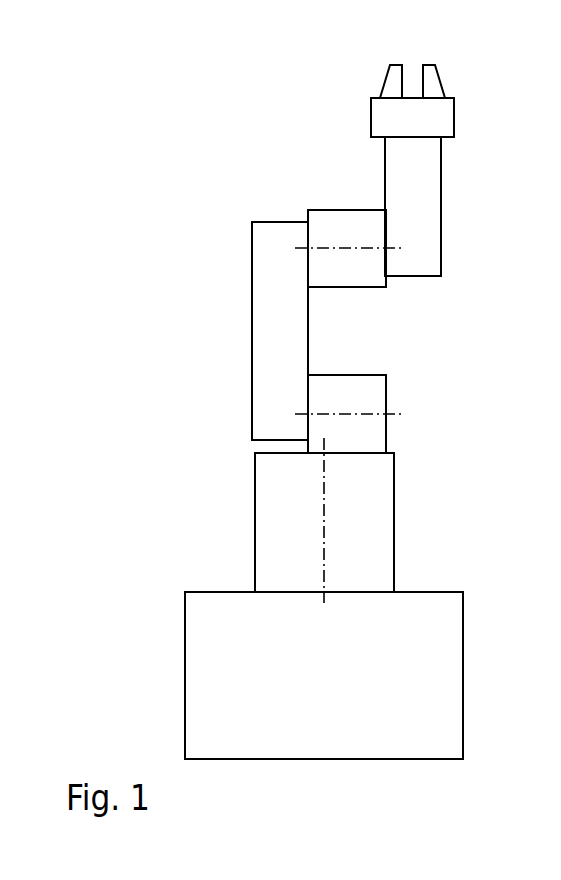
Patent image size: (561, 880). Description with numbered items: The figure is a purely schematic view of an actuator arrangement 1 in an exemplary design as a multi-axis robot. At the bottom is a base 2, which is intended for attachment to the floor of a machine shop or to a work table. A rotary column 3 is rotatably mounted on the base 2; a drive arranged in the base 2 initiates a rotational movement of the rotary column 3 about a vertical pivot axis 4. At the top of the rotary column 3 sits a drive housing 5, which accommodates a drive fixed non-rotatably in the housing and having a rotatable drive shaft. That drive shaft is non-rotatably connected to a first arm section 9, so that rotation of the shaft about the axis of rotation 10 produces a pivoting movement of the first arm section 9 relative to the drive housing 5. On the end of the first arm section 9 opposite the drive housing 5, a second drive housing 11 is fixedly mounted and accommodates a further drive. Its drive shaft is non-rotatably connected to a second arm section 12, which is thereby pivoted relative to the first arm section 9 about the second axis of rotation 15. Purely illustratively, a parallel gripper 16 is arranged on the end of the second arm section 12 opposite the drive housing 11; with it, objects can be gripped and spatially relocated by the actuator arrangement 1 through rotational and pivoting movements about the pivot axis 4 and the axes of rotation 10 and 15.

The actuator arrangement 1 is at (147, 185).
The base 2 is at (442, 700).
The rotary column 3 is at (375, 520).
The pivot axis 4 is at (322, 558).
The drive housing 5 is at (372, 390).
The first arm section 9 is at (267, 349).
The axis of rotation 10 is at (362, 415).
The second drive housing 11 is at (328, 222).
The second arm section 12 is at (418, 182).
The second axis of rotation 15 is at (343, 250).
The parallel gripper 16 is at (440, 120).